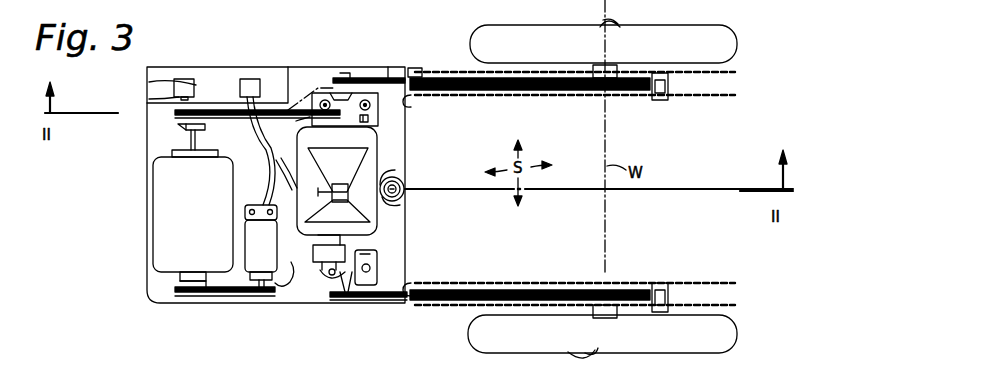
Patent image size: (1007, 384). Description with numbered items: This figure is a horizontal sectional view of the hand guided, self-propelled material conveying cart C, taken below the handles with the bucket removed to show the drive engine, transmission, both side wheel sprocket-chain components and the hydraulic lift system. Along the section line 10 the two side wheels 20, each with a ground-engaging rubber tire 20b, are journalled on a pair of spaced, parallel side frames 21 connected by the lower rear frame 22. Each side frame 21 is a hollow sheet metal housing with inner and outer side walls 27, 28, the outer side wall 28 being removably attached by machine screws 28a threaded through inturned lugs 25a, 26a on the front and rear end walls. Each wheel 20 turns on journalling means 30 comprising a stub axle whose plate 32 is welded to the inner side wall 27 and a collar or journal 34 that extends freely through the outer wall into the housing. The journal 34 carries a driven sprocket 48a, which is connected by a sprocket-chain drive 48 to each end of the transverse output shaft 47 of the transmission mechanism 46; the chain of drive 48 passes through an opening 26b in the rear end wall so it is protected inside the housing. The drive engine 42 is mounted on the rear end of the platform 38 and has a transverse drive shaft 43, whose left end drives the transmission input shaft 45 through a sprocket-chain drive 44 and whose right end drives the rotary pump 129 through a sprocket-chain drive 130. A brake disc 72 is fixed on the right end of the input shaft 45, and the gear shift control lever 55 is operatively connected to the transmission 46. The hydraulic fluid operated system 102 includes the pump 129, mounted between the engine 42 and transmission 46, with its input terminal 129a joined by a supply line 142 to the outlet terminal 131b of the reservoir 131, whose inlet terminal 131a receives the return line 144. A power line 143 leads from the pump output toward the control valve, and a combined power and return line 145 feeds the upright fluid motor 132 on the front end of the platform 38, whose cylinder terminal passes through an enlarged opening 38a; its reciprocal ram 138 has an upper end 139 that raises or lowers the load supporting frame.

The section line 10- 10 is at (605, 12).
The side wheel 20 is at (742, 42).
The ground-engaging rubber tire 20b is at (735, 50).
The side frame 21 is at (458, 68).
The lower rear frame 22 is at (362, 66).
The inturned lug 25a is at (670, 88).
The inturned lug 26a is at (420, 69).
The opening 26b is at (423, 195).
The inner side wall 27 is at (540, 96).
The outer side wall 28 is at (530, 71).
The machine screw 28a is at (418, 70).
The journalling means 30 is at (622, 26).
The plate 32 is at (592, 95).
The journal 34 is at (610, 65).
The platform 38 is at (151, 297).
The enlarged opening 38a is at (393, 177).
The drive engine 42 is at (146, 218).
The drive shaft 43 is at (178, 142).
The sprocket-chain drive 44 is at (222, 110).
The input shaft 45 is at (296, 121).
The transmission mechanism 46 is at (382, 152).
The output shaft 47 is at (342, 78).
The sprocket-chain drive 48 is at (392, 66).
The driven sprocket 48a is at (640, 100).
The gear shift control lever 55 is at (332, 187).
The brake wheel or disc 72 is at (313, 252).
The hydraulic fluid operated system 102 is at (146, 88).
The rotary pump 129 is at (244, 240).
The input terminal 129a is at (245, 214).
The sprocket-chain drive 130 is at (216, 300).
The reservoir 131 is at (197, 67).
The inlet terminal 131a is at (174, 82).
The outlet terminal 131b is at (258, 78).
The fluid motor 132 is at (405, 191).
The ram 138 is at (404, 184).
The upper end of ram 139 is at (400, 204).
The supply line 142 is at (250, 125).
The power line 143 is at (288, 278).
The return line 144 is at (158, 99).
The combined power and return line 145 is at (264, 175).
The material conveying cart C is at (376, 66).